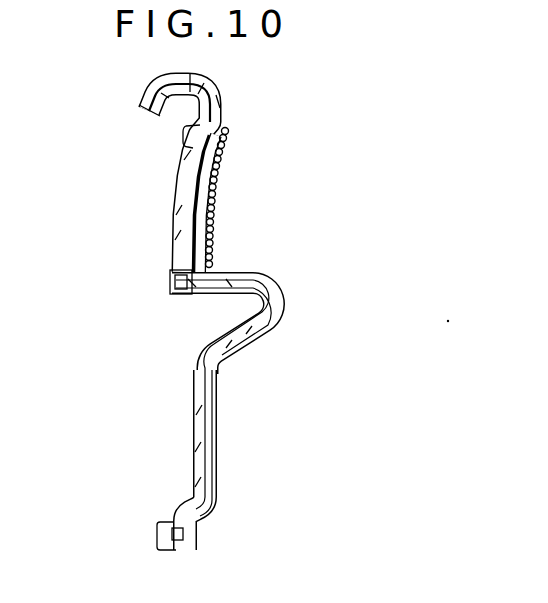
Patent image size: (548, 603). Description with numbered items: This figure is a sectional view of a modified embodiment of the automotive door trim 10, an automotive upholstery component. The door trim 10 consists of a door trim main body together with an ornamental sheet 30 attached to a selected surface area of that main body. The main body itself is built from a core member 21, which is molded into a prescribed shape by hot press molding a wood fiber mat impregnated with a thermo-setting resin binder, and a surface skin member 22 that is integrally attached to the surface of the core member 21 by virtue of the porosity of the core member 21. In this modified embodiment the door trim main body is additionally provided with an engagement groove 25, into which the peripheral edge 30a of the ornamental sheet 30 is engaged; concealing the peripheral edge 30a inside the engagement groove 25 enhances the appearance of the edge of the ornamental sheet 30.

The automotive door trim 10 is at (235, 312).
The core member 21 is at (192, 378).
The surface skin member 22 is at (278, 322).
The engagement groove 25 is at (186, 132).
The ornamental sheet 30 is at (208, 186).
The peripheral edge 30a is at (223, 128).